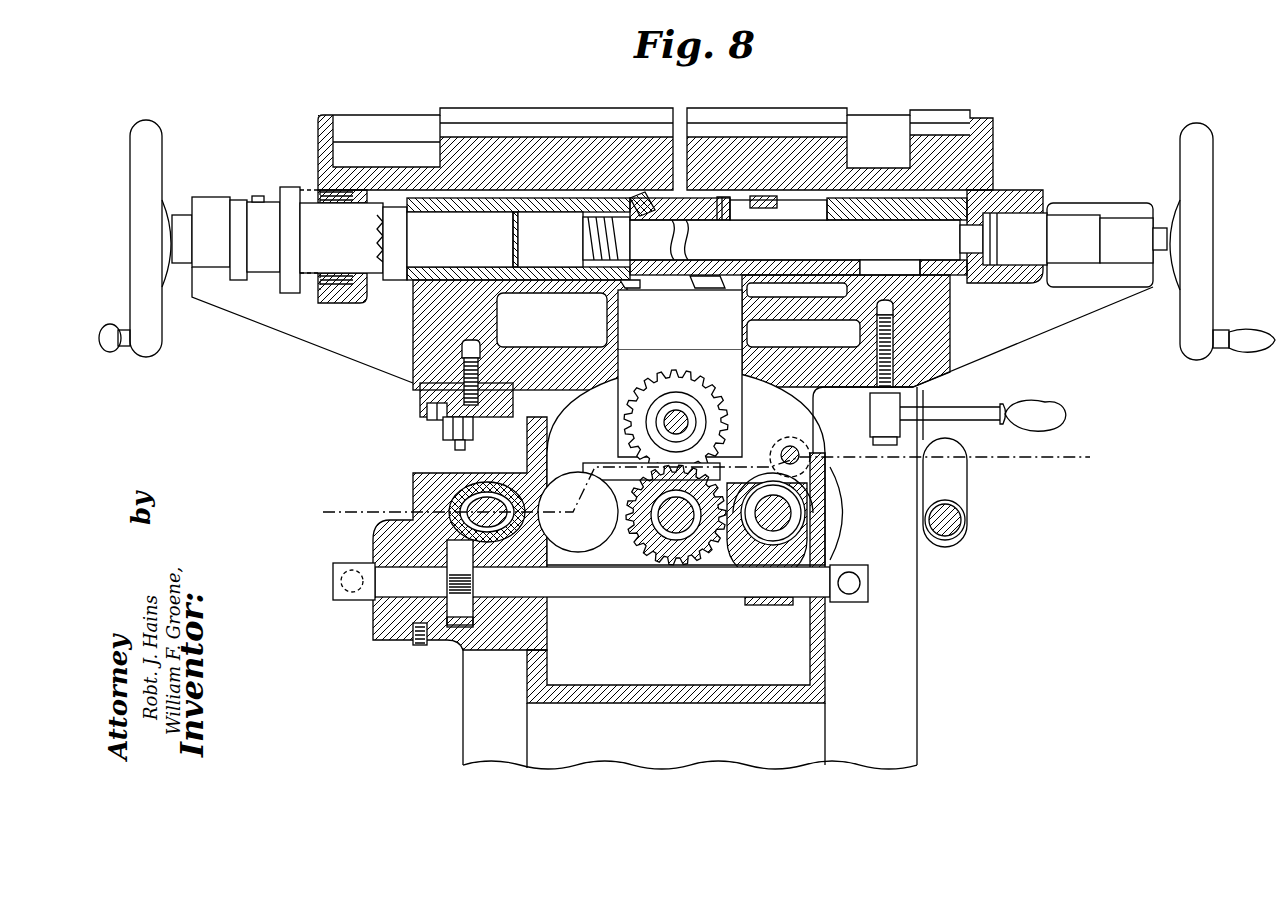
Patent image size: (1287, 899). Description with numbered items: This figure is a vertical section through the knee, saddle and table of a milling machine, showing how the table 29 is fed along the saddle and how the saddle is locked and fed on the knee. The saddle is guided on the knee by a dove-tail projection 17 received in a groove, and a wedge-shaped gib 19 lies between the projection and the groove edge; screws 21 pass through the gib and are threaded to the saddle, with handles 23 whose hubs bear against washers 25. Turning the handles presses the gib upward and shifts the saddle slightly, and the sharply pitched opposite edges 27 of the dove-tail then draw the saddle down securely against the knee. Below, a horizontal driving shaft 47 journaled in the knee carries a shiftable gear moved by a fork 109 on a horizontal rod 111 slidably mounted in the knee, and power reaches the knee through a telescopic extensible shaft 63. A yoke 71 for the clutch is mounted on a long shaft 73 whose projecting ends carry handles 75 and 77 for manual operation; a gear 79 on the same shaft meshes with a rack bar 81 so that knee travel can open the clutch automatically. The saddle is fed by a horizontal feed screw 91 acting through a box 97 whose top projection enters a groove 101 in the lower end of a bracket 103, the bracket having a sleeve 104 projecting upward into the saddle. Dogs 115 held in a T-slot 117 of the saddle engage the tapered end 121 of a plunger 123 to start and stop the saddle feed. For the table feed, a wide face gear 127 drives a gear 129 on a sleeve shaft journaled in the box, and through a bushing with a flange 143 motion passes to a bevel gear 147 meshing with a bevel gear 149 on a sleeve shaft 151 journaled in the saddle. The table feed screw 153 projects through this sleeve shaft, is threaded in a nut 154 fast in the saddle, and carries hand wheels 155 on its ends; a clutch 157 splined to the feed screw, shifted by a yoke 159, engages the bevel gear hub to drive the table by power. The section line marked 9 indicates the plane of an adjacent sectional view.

The section line 9- 9 is at (331, 524).
The dove-tail projection 17 is at (840, 358).
The gib 19 is at (853, 391).
The screws 21 is at (897, 338).
The handles 23 is at (1043, 434).
The washers 25 is at (927, 399).
The opposite edges 27 is at (422, 394).
The table 29 is at (318, 131).
The horizontal driving shaft 47 is at (795, 519).
The telescopic extensible shaft 63 is at (958, 439).
The yoke 71 is at (838, 541).
The long shaft 73 is at (703, 591).
The handle 75 is at (868, 574).
The handle 77 is at (335, 569).
The gear 79 is at (453, 598).
The rack bar 81 is at (445, 649).
The horizontal feed screw 91 is at (690, 423).
The box 97 is at (735, 433).
The groove 101 is at (608, 396).
The bracket 103 is at (663, 356).
The sleeve 104 is at (713, 330).
The fork 109 is at (838, 481).
The horizontal rod 111 is at (801, 452).
The dogs 115 is at (440, 426).
The T-slot 117 is at (427, 409).
The tapered end 121 is at (455, 448).
The plunger 123 is at (470, 467).
The wide face gear 127 is at (673, 558).
The gear 129 is at (640, 444).
The flange 143 is at (694, 291).
The bevel gear 147 is at (700, 279).
The bevel gear 149 is at (633, 278).
The sleeve shaft 151 is at (630, 223).
The feed screw 153 is at (586, 244).
The nut 154 is at (453, 260).
The hand wheels 155 is at (131, 276).
The clutch 157 is at (744, 208).
The yoke 159 is at (793, 263).